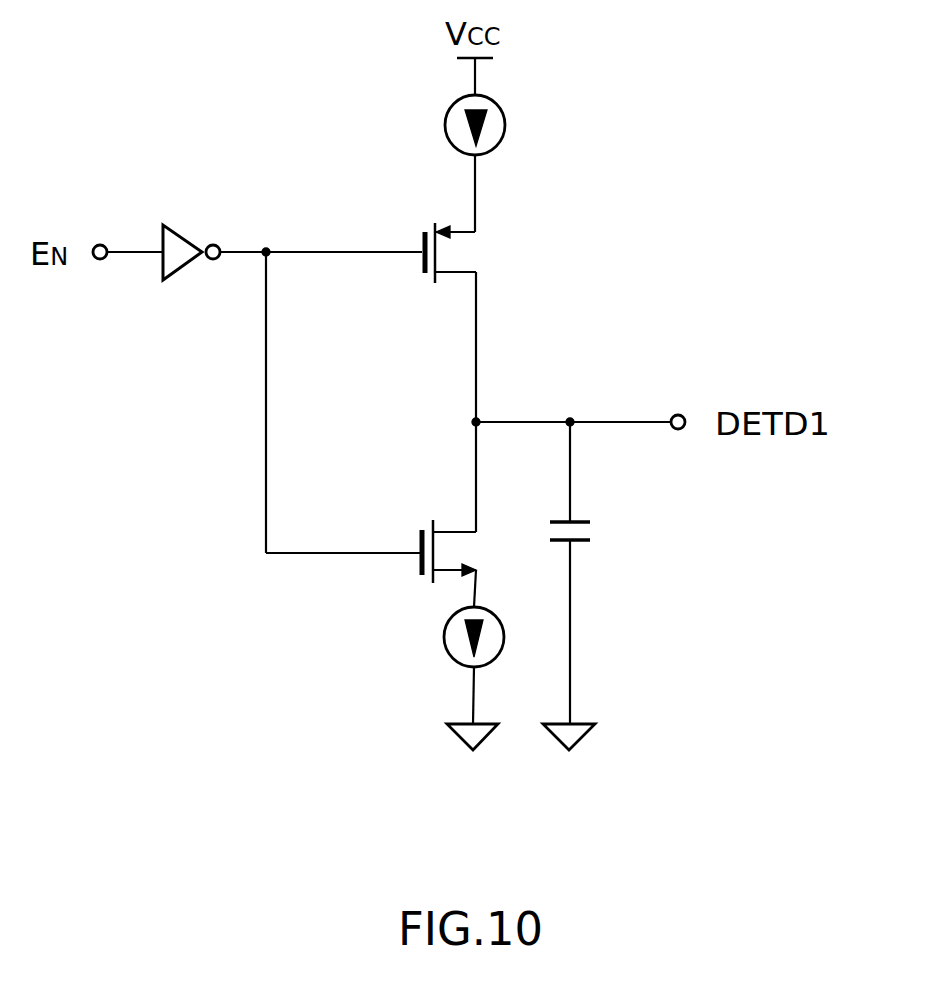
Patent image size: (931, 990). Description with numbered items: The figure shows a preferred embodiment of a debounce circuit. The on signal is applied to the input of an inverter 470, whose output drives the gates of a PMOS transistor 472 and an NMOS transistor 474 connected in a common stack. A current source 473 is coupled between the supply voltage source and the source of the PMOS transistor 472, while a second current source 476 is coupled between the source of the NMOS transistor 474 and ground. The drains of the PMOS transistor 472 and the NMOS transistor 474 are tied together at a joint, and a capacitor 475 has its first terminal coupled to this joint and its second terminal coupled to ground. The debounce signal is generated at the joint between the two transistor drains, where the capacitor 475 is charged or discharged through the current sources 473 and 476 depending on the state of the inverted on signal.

The inverter 470 is at (193, 227).
The PMOS transistor 472 is at (448, 282).
The current source 473 is at (512, 125).
The NMOS transistor 474 is at (411, 558).
The capacitor 475 is at (540, 533).
The current source 476 is at (438, 645).